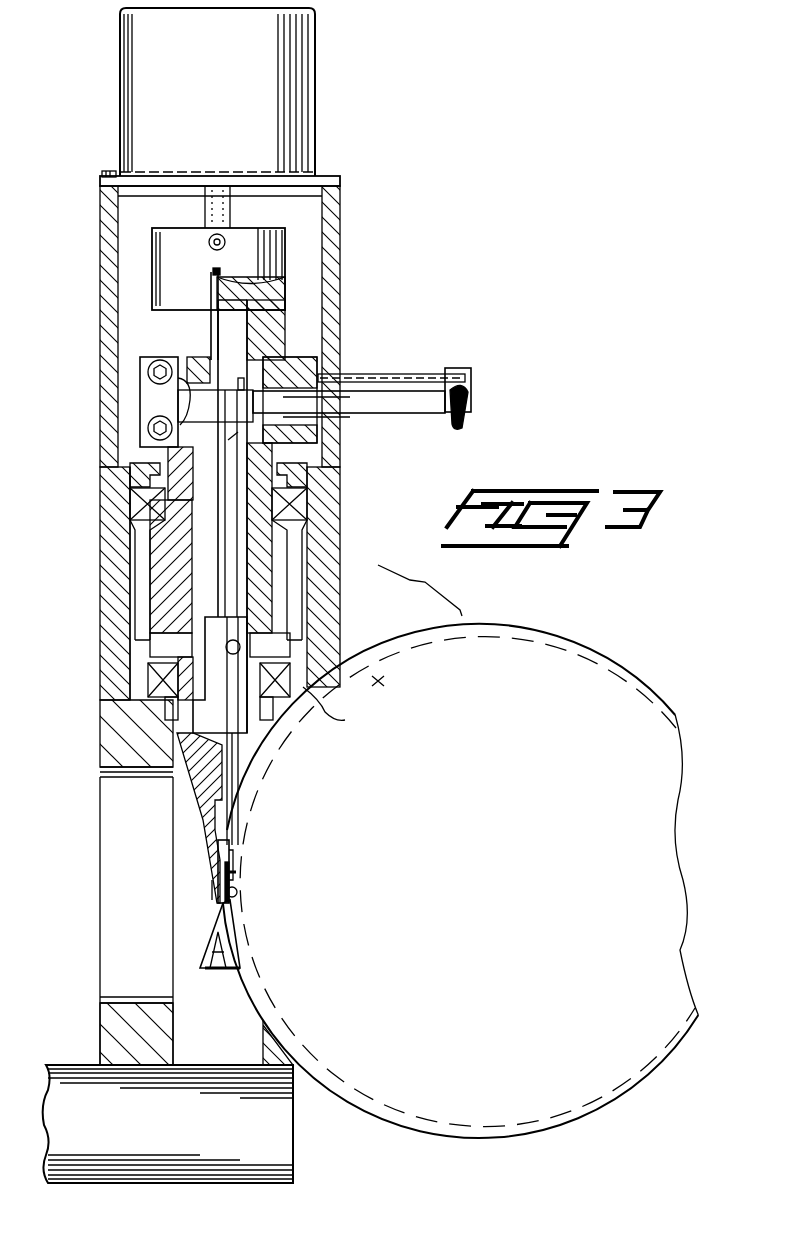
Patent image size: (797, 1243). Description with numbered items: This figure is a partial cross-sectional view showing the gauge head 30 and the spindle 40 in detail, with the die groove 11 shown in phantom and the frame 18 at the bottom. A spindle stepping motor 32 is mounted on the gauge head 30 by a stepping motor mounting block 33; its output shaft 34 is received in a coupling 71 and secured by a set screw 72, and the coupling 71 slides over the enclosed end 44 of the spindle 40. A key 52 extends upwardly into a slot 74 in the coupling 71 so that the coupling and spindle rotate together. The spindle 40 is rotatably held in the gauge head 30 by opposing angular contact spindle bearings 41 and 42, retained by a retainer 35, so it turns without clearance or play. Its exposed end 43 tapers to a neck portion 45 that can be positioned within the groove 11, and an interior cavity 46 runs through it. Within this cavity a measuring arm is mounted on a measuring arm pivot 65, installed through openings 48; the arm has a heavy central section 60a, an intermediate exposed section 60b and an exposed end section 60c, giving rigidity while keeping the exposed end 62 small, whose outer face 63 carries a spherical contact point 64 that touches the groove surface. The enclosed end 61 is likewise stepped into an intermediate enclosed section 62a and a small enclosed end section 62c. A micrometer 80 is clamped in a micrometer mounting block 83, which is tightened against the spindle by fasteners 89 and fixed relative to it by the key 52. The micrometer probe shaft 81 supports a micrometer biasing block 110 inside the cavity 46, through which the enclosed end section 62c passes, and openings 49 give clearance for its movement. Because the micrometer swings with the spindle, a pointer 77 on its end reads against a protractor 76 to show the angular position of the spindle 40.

The groove 11 is at (396, 686).
The frame 18 is at (168, 1101).
The gauge head 30 is at (110, 583).
The spindle stepping motor 32 is at (316, 72).
The stepping motor mounting block 33 is at (342, 258).
The output shaft 34 is at (205, 212).
The retainer 35 is at (307, 478).
The spindle 40 is at (302, 560).
The spindle bearing 41 is at (300, 507).
The spindle bearing 42 is at (336, 710).
The exposed end 43 is at (242, 940).
The enclosed end 44 is at (265, 332).
The neck portion 45 is at (210, 888).
The interior cavity 46 is at (200, 580).
The openings 48 is at (220, 645).
The openings 49 is at (190, 360).
The key 52 is at (210, 318).
The heavy central section 60a is at (220, 675).
The intermediate exposed section 60b is at (240, 775).
The exposed end section 60c is at (238, 828).
The enclosed end 61 is at (209, 448).
The exposed end 62 is at (236, 874).
The intermediate enclosed section 62a is at (224, 546).
The enclosed end section 62c is at (217, 436).
The outer face 63 is at (240, 855).
The contact point 64 is at (243, 905).
The measuring arm pivot 65 is at (233, 640).
The coupling 71 is at (152, 258).
The set screw 72 is at (212, 248).
The slot 74 is at (222, 272).
The protractor 76 is at (415, 374).
The pointer 77 is at (472, 392).
The micrometer 80 is at (378, 413).
The micrometer probe shaft 81 is at (316, 406).
The micrometer mounting block 83 is at (148, 377).
The fasteners 89 is at (166, 401).
The micrometer biasing block 110 is at (215, 406).